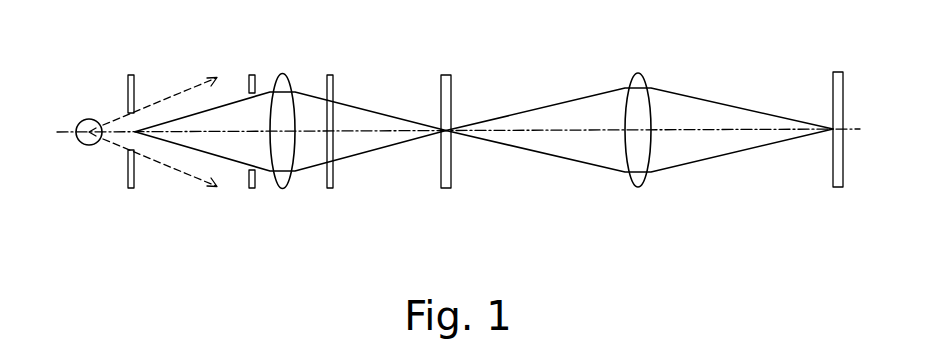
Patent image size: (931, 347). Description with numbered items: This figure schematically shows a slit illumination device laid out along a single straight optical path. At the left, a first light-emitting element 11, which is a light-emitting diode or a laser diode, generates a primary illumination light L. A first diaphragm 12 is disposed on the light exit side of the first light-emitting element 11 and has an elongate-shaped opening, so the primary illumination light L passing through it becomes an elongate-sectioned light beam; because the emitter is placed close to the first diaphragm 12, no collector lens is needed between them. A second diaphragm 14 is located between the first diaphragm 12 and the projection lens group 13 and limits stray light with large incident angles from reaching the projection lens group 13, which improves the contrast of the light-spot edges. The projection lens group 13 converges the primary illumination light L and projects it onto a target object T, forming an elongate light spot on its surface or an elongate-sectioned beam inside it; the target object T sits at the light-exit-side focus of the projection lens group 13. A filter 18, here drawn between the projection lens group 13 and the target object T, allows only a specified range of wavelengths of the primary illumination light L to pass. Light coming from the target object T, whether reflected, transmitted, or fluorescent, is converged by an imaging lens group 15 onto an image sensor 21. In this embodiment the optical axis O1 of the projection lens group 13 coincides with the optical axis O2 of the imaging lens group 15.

The first light-emitting element 11 is at (89, 118).
The first diaphragm 12 is at (131, 75).
The projection lens group 13 is at (282, 73).
The second diaphragm 14 is at (252, 75).
The imaging lens group 15 is at (640, 73).
The filter 18 is at (330, 75).
The image sensor 21 is at (838, 72).
The target object T is at (446, 75).
The primary illumination light L is at (169, 128).
The optical axis of the projection lens group O1 is at (41, 132).
The optical axis of the imaging lens group O2 is at (880, 131).